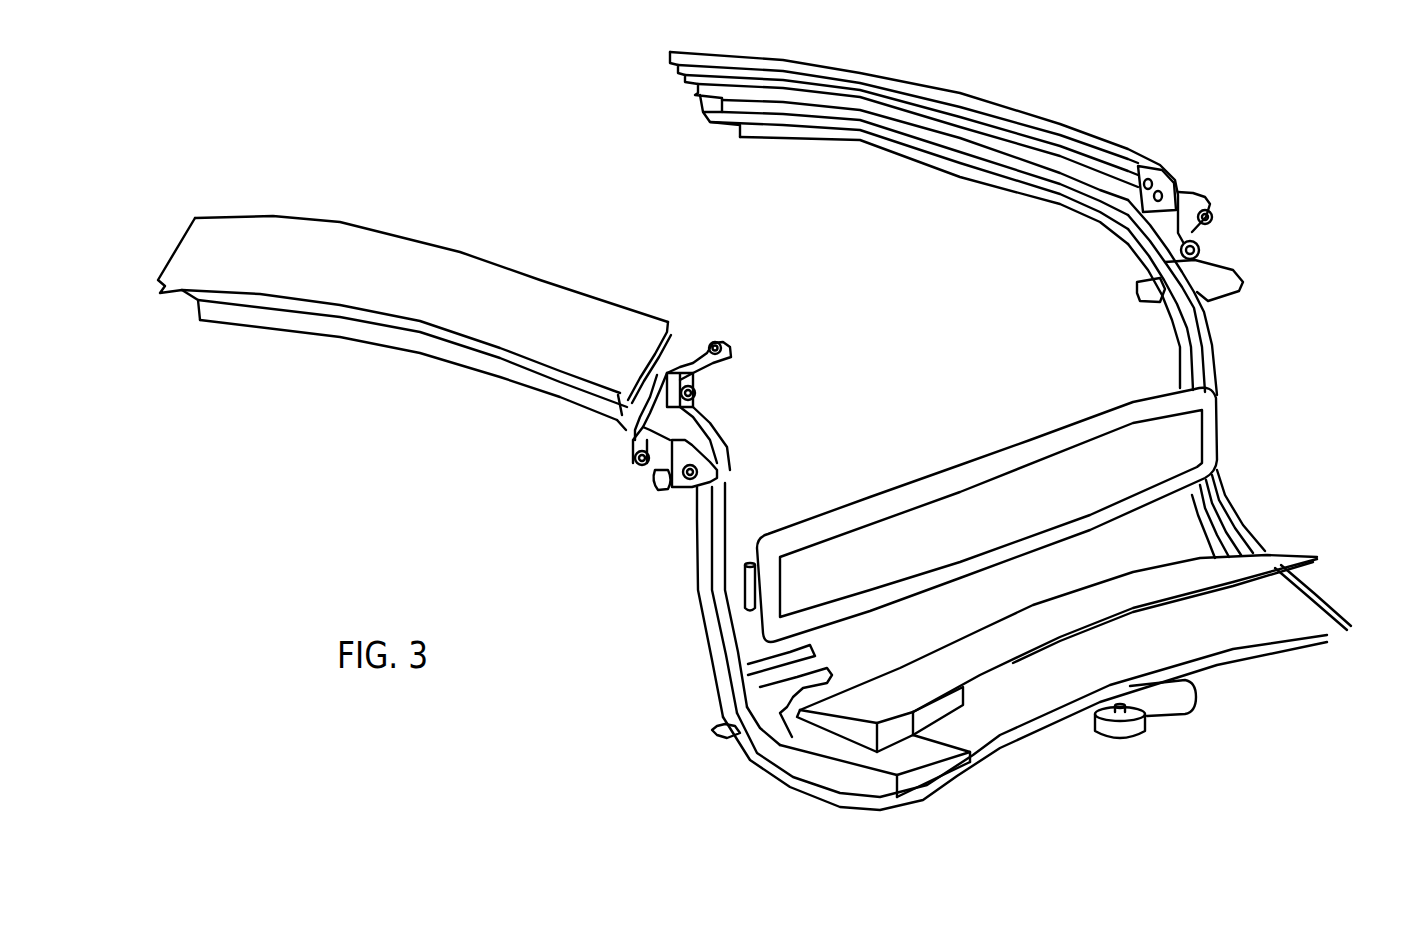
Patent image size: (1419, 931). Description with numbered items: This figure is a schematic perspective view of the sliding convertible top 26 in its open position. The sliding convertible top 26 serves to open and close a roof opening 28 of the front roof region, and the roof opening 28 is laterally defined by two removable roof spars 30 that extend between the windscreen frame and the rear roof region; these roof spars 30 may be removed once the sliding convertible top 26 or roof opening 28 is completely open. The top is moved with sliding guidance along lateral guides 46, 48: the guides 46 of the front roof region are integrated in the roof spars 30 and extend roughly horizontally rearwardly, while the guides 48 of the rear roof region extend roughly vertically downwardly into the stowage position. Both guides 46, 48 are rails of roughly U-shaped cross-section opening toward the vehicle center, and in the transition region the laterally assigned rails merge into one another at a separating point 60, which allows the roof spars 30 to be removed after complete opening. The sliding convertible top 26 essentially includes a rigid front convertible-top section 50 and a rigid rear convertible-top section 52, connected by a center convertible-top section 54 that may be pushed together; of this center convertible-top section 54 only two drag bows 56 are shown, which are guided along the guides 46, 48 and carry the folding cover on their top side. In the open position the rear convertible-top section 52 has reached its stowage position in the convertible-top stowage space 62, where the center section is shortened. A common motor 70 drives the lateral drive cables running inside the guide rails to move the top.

The sliding convertible top 26 is at (938, 418).
The roof opening 28 is at (647, 203).
The roof spars 30 is at (397, 300).
The lateral guides 46 is at (872, 117).
The lateral guides 48 is at (723, 583).
The front convertible-top section 50 is at (1020, 483).
The rear convertible-top section 52 is at (1260, 553).
The center convertible-top section 54 is at (1268, 505).
The drag bows 56 is at (1188, 526).
The separating point 60 is at (1150, 287).
The convertible-top stowage space 62 is at (729, 769).
The motor 70 is at (1140, 727).